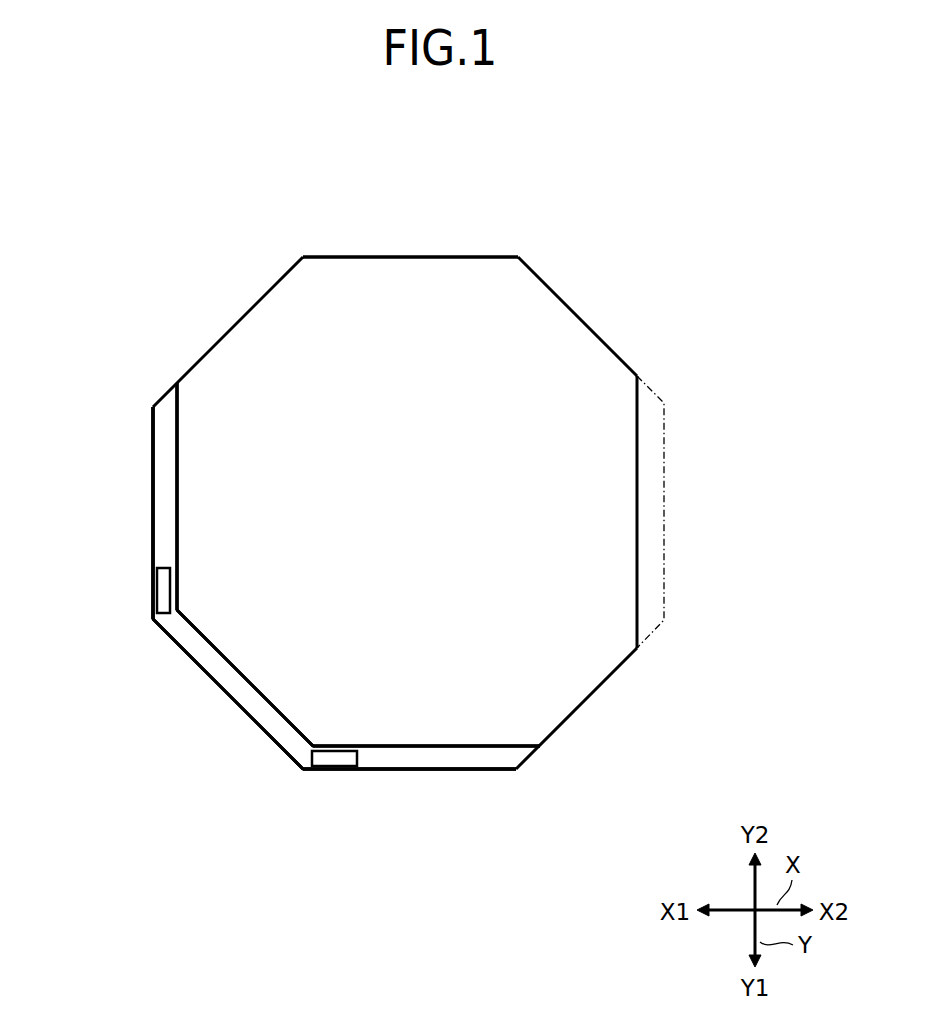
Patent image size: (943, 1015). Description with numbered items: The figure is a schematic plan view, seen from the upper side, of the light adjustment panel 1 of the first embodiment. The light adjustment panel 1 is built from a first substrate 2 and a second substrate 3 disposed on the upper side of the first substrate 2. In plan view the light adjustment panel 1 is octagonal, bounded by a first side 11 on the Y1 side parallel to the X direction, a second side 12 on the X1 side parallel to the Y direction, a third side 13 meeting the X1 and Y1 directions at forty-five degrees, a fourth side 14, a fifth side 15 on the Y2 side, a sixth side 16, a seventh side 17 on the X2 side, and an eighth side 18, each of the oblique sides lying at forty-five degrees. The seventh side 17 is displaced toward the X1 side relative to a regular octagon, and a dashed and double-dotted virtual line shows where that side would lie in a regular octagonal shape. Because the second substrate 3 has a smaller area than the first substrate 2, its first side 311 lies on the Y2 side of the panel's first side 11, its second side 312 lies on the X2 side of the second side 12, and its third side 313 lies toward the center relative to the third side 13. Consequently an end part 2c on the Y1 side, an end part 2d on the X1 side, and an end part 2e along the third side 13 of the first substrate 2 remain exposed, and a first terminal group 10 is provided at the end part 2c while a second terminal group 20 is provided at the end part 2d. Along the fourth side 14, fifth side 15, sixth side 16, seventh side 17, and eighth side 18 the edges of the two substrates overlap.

The light adjustment panel 1 is at (389, 510).
The first substrate 2 is at (346, 576).
The end part 2c is at (432, 760).
The end part 2d is at (165, 527).
The end part 2e is at (268, 717).
The second substrate 3 is at (340, 315).
The first terminal group 10 is at (333, 757).
The first side 11 is at (475, 771).
The second side 12 is at (152, 477).
The third side 13 is at (225, 692).
The fourth side 14 is at (228, 334).
The fifth side 15 is at (407, 257).
The sixth side 16 is at (596, 334).
The seventh side 17 is at (640, 497).
The eighth side 18 is at (611, 674).
The second terminal group 20 is at (163, 590).
The first side 311 is at (498, 748).
The second side 312 is at (177, 431).
The third side 313 is at (212, 646).